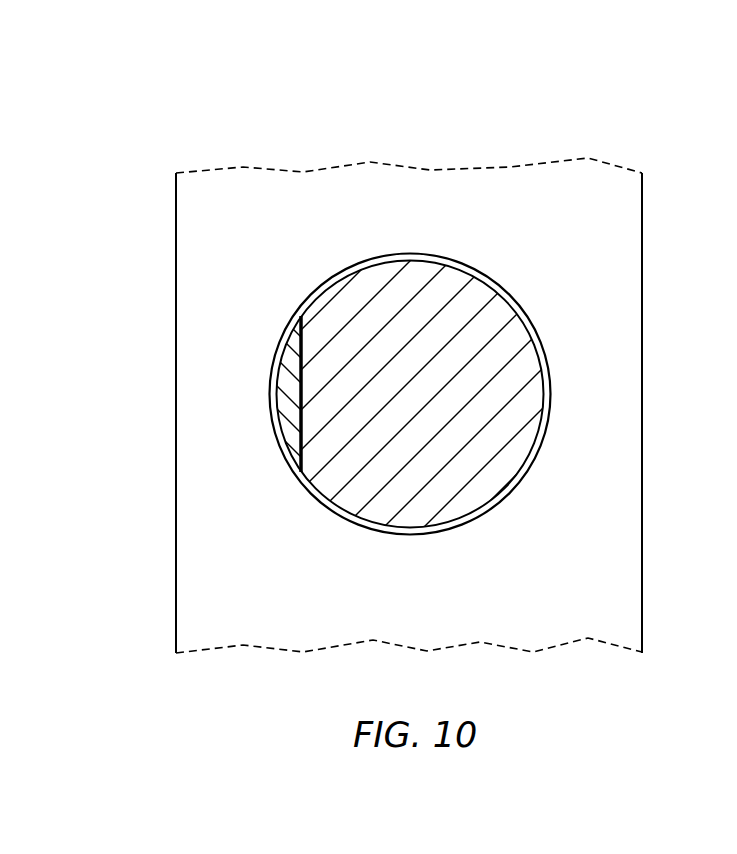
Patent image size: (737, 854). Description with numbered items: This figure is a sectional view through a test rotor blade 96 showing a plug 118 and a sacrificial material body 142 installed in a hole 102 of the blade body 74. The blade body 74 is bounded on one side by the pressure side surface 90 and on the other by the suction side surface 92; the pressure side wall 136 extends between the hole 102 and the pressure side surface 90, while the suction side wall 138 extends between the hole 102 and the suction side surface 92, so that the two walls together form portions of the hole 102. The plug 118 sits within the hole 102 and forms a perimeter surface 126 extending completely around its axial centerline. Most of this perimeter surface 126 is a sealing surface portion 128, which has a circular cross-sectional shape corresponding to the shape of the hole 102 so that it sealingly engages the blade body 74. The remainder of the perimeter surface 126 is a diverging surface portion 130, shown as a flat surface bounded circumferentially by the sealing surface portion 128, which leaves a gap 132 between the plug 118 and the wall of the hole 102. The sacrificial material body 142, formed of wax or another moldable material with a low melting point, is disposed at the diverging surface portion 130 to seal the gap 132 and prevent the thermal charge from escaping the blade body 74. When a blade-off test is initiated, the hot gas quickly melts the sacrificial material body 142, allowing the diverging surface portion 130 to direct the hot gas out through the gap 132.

The test rotor blade 96 is at (620, 100).
The blade body 74 is at (490, 187).
The suction side surface 92 is at (176, 218).
The pressure side surface 90 is at (645, 293).
The sealing surface portion 128 is at (505, 298).
The perimeter surface 126 is at (445, 540).
The hole 102 is at (508, 515).
The plug 118 is at (495, 397).
The sacrificial material body 142 is at (292, 417).
The diverging surface portion 130 is at (298, 470).
The gap 132 is at (285, 365).
The suction side wall 138 is at (200, 430).
The pressure side wall 136 is at (600, 444).